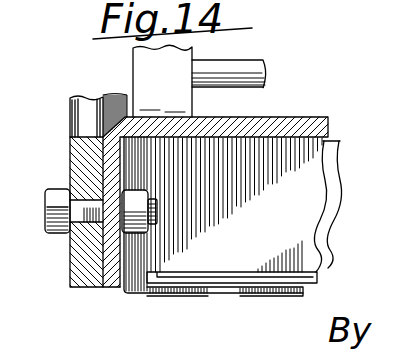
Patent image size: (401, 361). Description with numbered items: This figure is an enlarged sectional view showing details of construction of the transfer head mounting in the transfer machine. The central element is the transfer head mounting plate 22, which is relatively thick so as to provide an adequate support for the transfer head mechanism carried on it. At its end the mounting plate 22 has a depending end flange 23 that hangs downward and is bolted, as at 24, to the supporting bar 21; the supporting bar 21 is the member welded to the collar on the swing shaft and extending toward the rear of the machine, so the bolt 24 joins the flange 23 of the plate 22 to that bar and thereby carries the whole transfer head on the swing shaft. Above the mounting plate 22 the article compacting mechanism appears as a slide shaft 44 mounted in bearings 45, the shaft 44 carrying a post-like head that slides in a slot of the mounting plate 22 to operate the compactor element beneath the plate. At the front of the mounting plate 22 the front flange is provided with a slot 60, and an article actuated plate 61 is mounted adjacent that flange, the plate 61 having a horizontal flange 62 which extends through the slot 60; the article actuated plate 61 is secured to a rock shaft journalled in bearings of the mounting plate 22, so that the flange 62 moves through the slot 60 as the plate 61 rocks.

The supporting bar 21 is at (89, 288).
The transfer head mounting plate 22 is at (297, 120).
The depending end flange 23 is at (113, 177).
The bolt 24 is at (58, 197).
The slide shaft 44 is at (232, 86).
The bearings 45 is at (138, 81).
The slot 60 is at (199, 270).
The article actuated plate 61 is at (340, 177).
The horizontal flange 62 is at (216, 282).